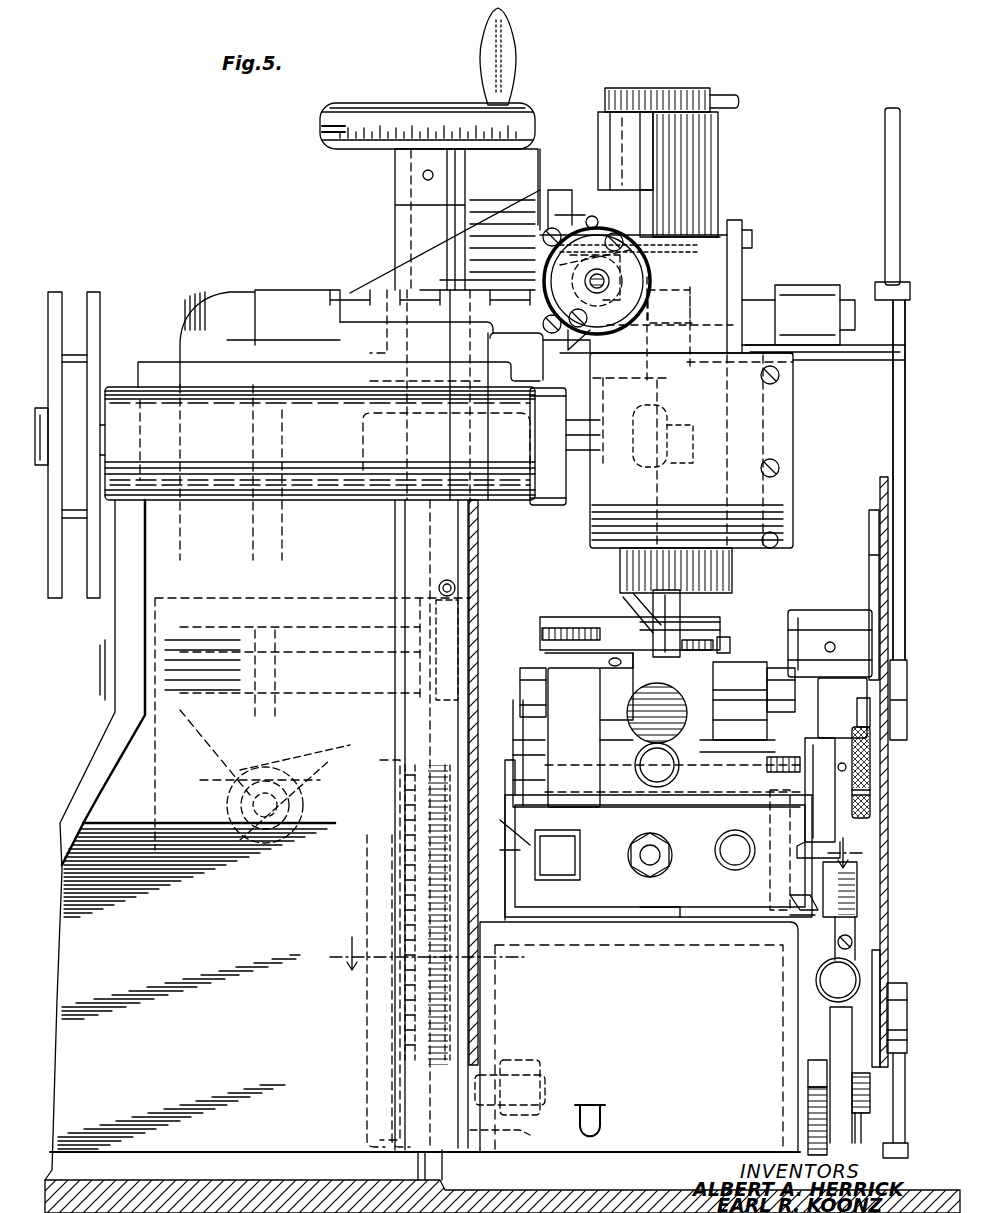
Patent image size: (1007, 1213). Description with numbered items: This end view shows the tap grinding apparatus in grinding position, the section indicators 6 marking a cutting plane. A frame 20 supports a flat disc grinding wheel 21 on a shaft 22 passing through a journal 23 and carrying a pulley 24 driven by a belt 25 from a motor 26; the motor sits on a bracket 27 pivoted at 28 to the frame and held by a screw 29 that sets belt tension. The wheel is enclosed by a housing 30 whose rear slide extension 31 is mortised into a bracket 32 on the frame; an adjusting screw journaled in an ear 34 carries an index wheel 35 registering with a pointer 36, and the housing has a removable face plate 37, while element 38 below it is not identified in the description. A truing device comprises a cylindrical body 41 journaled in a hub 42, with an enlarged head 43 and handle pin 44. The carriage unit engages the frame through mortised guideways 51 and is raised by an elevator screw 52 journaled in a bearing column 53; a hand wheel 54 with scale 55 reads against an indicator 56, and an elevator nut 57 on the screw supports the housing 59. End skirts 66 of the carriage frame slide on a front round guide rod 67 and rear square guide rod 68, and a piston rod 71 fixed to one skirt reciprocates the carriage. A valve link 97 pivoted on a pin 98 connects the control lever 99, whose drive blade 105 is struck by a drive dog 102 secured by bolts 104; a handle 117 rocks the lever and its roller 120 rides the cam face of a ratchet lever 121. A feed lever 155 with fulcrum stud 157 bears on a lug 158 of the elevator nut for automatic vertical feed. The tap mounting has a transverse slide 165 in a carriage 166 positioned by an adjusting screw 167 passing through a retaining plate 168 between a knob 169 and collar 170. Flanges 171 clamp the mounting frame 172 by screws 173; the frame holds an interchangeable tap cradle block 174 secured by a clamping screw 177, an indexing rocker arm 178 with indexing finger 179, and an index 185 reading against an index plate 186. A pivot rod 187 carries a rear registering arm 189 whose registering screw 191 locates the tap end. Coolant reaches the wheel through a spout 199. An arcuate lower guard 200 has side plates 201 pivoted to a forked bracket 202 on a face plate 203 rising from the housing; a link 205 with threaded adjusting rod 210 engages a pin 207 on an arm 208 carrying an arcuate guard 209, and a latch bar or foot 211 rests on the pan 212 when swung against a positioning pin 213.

The section line 6 is at (603, 904).
The frame 20 is at (330, 790).
The grinding wheel 21 is at (655, 296).
The shaft 22 is at (578, 475).
The journal 23 is at (122, 392).
The pulley 24 is at (102, 298).
The belt 25 is at (70, 300).
The motor 26 is at (235, 300).
The bracket 27 is at (165, 638).
The pivot 28 is at (226, 700).
The screw 29 is at (245, 840).
The housing 30 is at (728, 222).
The horizontal slide extension 31 is at (572, 218).
The bracket 32 is at (441, 285).
The ear 34 is at (600, 255).
The index wheel 35 is at (632, 240).
The pointer 36 is at (592, 215).
The face plate 37 is at (748, 266).
The ribbed lower housing 38 is at (732, 575).
The cylindrical body 41 is at (700, 139).
The hub 42 is at (722, 178).
The enlarged head 43 is at (692, 100).
The handle pin 44 is at (738, 100).
The mortised guideways 51 is at (450, 1142).
The elevator screw 52 is at (400, 866).
The bearing column 53 is at (395, 240).
The hand wheel 54 is at (385, 106).
The scale 55 is at (322, 132).
The indicator 56 is at (538, 168).
The elevator nut 57 is at (400, 1090).
The housing 59 is at (640, 1045).
The end skirts 66 is at (690, 920).
The front round guide rod 67 is at (735, 858).
The rear square guide rod 68 is at (575, 872).
The piston rod 71 is at (652, 860).
The valve link 97 is at (880, 1107).
The pin 98 is at (870, 1128).
The control lever 99 is at (838, 1043).
The drive dog 102 is at (800, 915).
The bolts 104 is at (769, 850).
The drive blade 105 is at (856, 889).
The handle 117 is at (826, 978).
The roller 120 is at (812, 1133).
The ratchet lever 121 is at (810, 1070).
The feed lever 155 is at (540, 1068).
The fulcrum stud 157 is at (545, 1088).
The lug 158 is at (537, 1127).
The transverse slide 165 is at (780, 775).
The carriage 166 is at (640, 790).
The adjusting screw 167 is at (790, 740).
The retaining plate 168 is at (840, 733).
The knob 169 is at (870, 780).
The collar 170 is at (628, 605).
The flanges 171 is at (661, 701).
The mounting frame 172 is at (612, 705).
The screws 173 is at (535, 672).
The tap cradle block 174 is at (670, 628).
The clamping screw 177 is at (722, 650).
The indexing rocker arm 178 is at (618, 640).
The indexing finger 179 is at (620, 622).
The index 185 is at (740, 703).
The index plate 186 is at (745, 732).
The pivot rod 187 is at (670, 774).
The rear registering arm 189 is at (718, 648).
The registering screw 191 is at (657, 713).
The spout 199 is at (705, 594).
The arcuate lower guard 200 is at (639, 1037).
The side plates 201 is at (478, 780).
The forked bracket 202 is at (777, 623).
The face plate 203 is at (428, 880).
The link 205 is at (896, 405).
The pin 207 is at (870, 360).
The arm 208 is at (810, 300).
The arcuate guard 209 is at (691, 450).
The threaded adjusting rod 210 is at (888, 158).
The latch bar or foot 211 is at (906, 1088).
The pan 212 is at (185, 1190).
The positioning pin 213 is at (887, 1003).